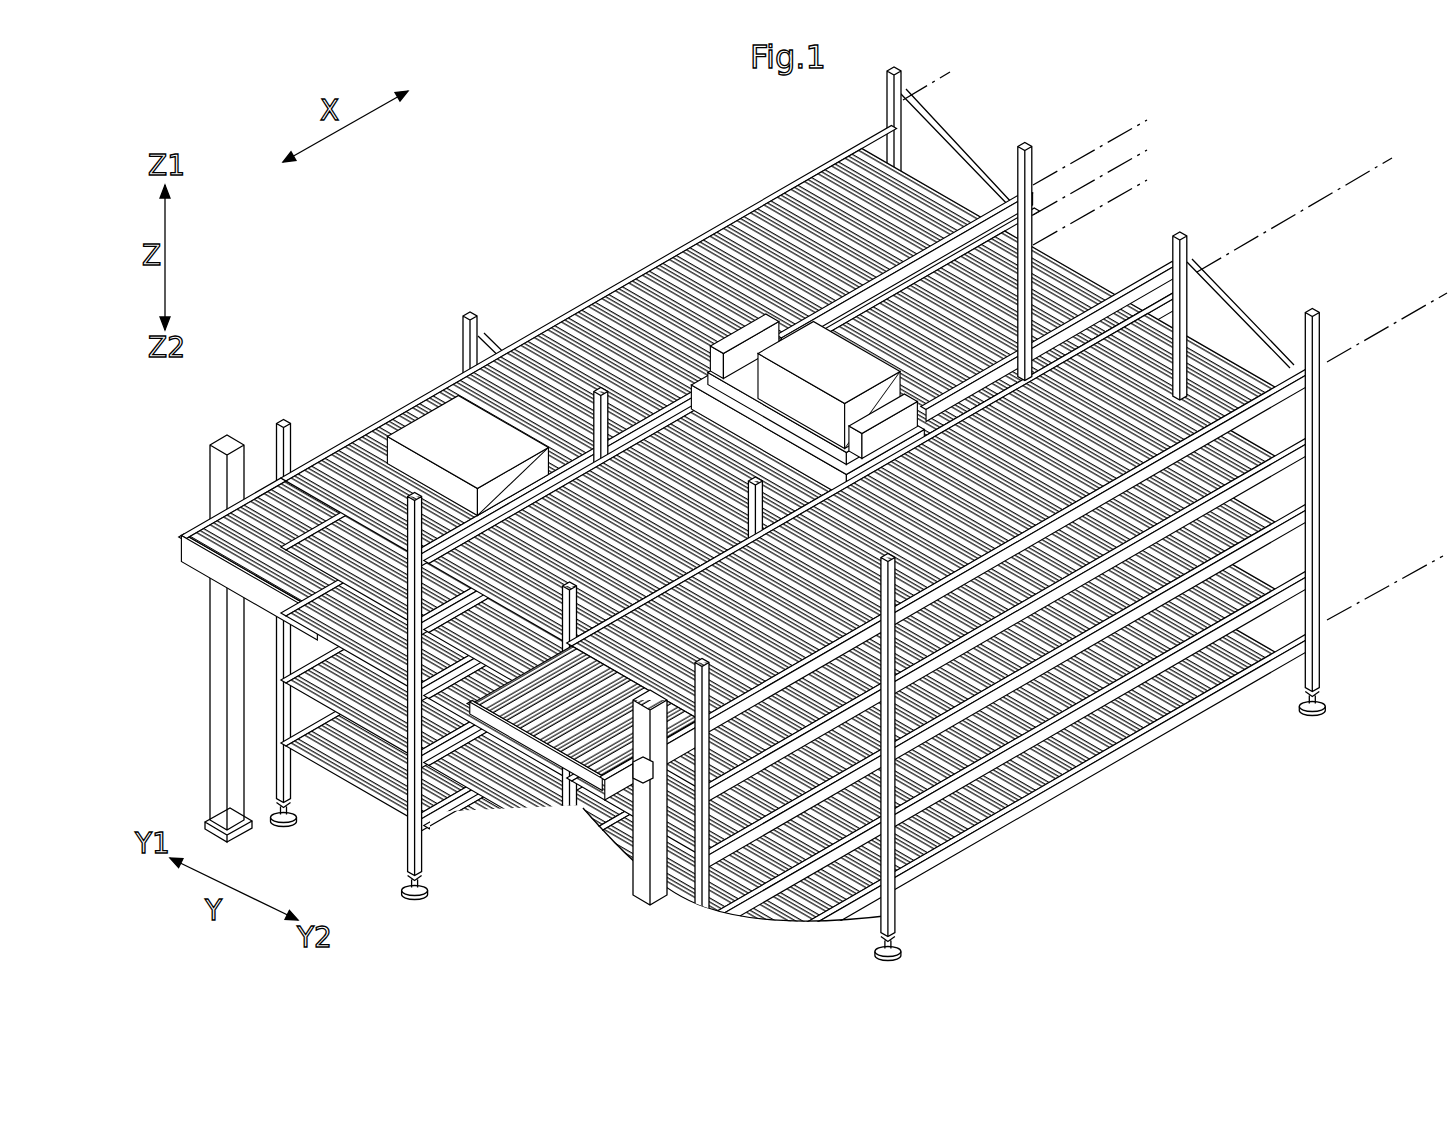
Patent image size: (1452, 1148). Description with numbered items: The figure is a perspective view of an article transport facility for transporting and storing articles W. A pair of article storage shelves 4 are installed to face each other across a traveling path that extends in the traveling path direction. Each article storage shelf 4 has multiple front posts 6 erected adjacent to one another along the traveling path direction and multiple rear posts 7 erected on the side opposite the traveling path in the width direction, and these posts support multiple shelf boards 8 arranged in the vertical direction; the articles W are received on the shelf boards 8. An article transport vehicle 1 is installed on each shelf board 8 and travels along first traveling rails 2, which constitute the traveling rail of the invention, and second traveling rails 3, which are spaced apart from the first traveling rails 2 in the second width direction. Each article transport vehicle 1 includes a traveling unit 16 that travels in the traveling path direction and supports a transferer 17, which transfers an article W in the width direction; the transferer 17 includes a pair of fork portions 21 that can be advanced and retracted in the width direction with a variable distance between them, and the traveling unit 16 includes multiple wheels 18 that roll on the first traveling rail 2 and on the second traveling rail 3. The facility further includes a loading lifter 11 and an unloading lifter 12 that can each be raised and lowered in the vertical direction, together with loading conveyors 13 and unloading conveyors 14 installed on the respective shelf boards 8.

The article transport vehicle 1 is at (760, 460).
The first traveling rail 2 is at (700, 440).
The second traveling rail 3 is at (1110, 310).
The article storage shelf 4 is at (797, 140).
The front post 6 is at (1035, 160).
The rear post 7 is at (905, 85).
The shelf board 8 is at (670, 260).
The loading lifter 11 is at (240, 600).
The unloading lifter 12 is at (620, 740).
The loading conveyor 13 is at (345, 460).
The unloading conveyor 14 is at (700, 860).
The traveling unit 16 is at (1030, 240).
The transferer 17 is at (803, 307).
The wheel 18 is at (1015, 380).
The fork portion 21 is at (780, 340).
The article W is at (440, 420).